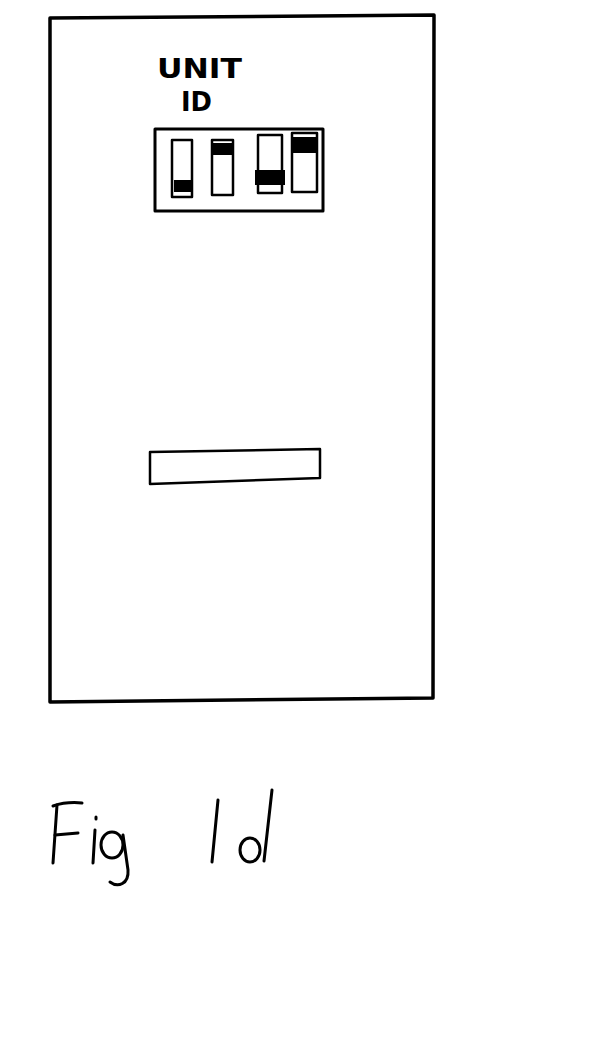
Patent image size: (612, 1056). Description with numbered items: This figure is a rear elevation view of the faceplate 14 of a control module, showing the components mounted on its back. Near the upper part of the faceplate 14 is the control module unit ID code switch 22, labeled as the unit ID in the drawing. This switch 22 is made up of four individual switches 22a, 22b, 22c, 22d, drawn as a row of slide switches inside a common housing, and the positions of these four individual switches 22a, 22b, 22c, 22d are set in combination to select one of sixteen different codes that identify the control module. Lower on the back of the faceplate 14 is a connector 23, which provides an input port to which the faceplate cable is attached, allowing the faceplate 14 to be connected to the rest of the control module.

The faceplate 14 is at (433, 698).
The control module unit ID code switch 22 is at (323, 210).
The individual switch 22a is at (172, 197).
The individual switch 22b is at (213, 195).
The individual switch 22c is at (278, 133).
The individual switch 22d is at (323, 127).
The connector 23 is at (320, 472).